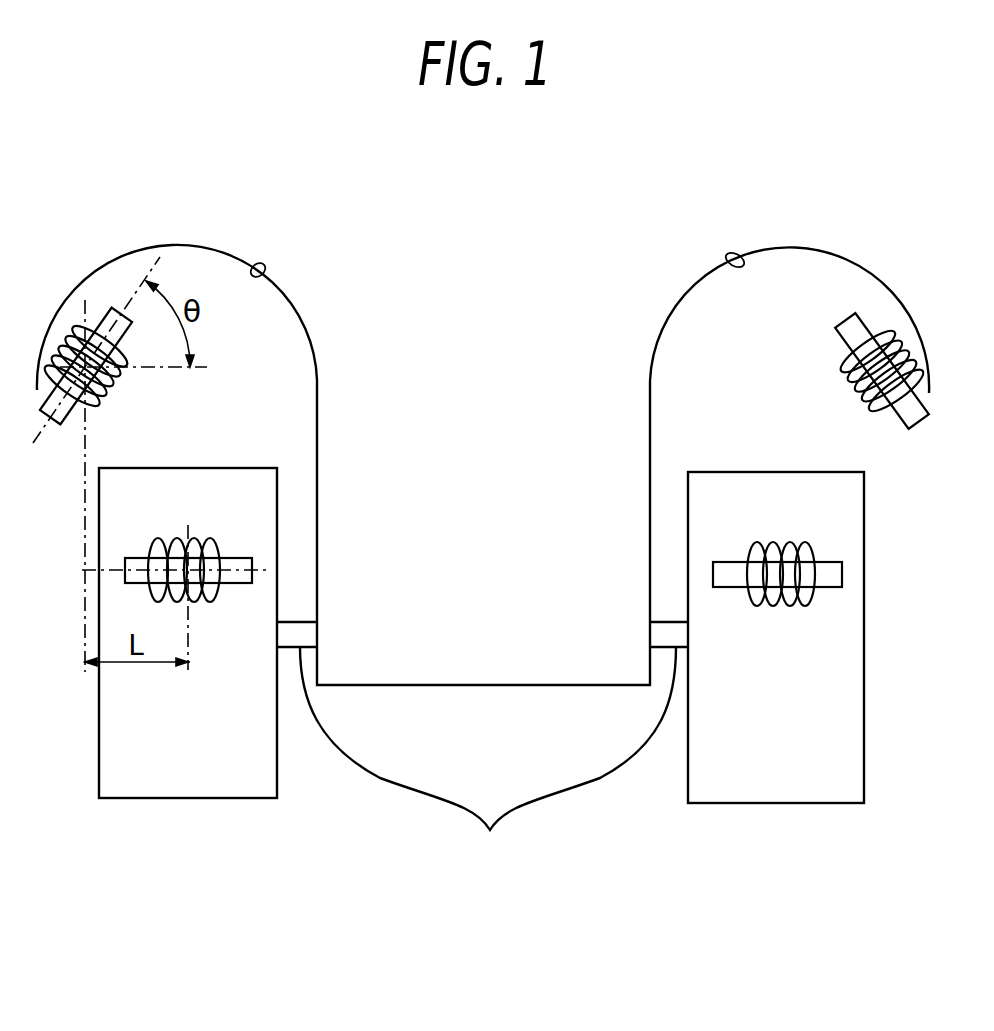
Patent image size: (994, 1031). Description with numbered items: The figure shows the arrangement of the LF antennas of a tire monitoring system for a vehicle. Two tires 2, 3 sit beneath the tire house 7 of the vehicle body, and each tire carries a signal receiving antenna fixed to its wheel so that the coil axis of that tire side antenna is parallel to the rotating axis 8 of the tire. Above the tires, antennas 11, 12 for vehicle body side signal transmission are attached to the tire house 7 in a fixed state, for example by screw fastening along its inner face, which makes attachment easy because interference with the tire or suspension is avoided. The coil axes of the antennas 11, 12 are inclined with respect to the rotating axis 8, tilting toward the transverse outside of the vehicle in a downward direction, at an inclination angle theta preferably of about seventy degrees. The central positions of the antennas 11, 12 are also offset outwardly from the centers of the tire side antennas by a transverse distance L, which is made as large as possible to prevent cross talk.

The tire 2 is at (753, 803).
The tire 3 is at (212, 798).
The tire house 7 is at (266, 272).
The rotating axis 8 is at (488, 758).
The antenna for vehicle body side signal transmission 11 is at (888, 333).
The antenna for vehicle body side signal transmission 12 is at (75, 328).